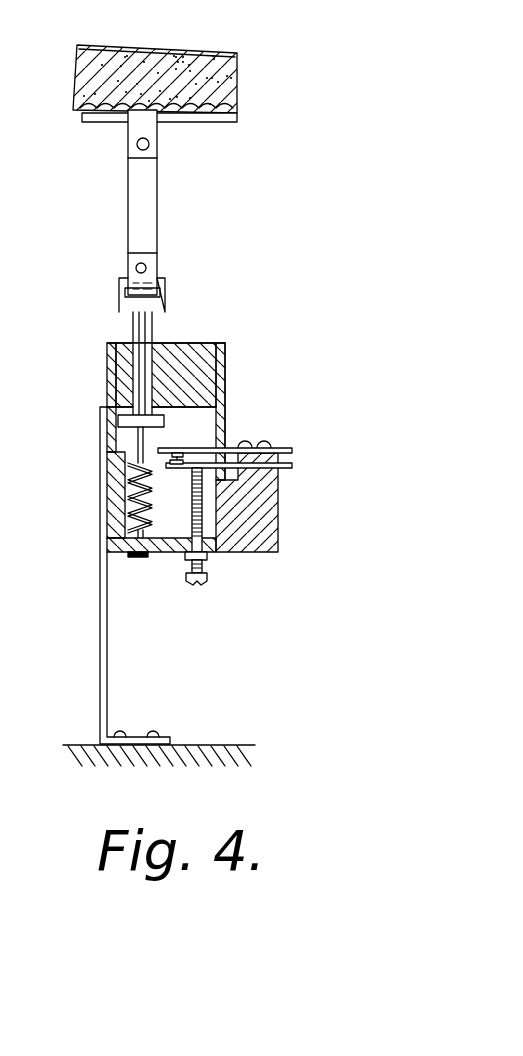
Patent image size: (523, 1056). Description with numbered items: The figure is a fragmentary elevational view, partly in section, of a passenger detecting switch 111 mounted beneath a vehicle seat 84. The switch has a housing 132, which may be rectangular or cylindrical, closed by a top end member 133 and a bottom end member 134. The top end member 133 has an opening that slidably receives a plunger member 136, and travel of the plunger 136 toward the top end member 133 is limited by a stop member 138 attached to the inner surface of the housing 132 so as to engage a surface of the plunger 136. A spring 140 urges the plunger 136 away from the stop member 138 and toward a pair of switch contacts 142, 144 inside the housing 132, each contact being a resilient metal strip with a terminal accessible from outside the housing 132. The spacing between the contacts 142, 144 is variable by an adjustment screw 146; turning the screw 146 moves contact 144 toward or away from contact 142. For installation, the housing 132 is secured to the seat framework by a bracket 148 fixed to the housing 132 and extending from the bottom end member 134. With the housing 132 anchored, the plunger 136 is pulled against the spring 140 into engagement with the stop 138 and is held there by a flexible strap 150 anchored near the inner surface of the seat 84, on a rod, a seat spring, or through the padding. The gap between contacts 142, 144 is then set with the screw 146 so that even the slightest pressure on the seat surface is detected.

The front seat 84 is at (307, 53).
The strap 150 is at (157, 190).
The top end member 133 is at (190, 350).
The passenger detecting switch 111 is at (284, 362).
The housing 132 is at (122, 448).
The plunger member 136 is at (118, 420).
The spring 140 is at (133, 512).
The bottom end member 134 is at (170, 547).
The switch contact 142 is at (178, 448).
The stop member 138 is at (197, 407).
The switch contact 144 is at (175, 468).
The adjustment screw 146 is at (205, 581).
The bracket 148 is at (102, 698).